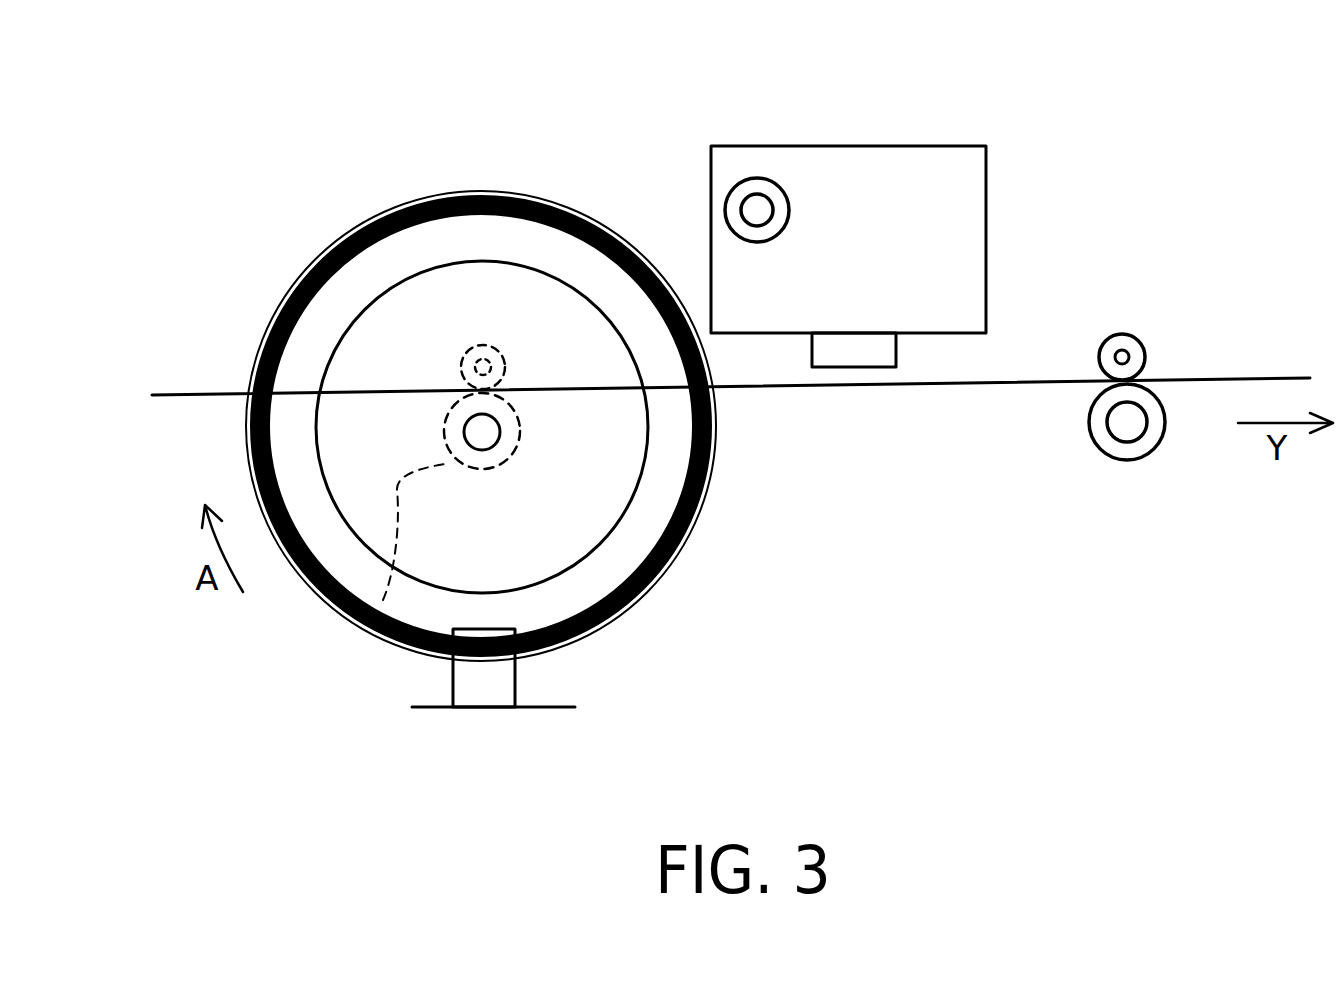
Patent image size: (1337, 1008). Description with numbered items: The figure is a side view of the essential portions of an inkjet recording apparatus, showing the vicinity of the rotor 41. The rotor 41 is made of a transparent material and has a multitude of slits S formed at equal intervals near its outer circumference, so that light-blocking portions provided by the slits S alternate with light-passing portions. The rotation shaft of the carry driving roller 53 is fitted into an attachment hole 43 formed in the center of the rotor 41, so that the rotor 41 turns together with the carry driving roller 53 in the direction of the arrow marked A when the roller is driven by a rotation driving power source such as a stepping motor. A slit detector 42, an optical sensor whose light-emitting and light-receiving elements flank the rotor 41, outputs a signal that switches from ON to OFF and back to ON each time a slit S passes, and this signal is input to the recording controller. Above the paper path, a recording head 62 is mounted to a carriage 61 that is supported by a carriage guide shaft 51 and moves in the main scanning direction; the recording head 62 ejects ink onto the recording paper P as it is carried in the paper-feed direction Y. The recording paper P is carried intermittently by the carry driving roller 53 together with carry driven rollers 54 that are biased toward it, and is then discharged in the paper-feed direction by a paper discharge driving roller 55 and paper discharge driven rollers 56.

The rotor 41 is at (377, 214).
The slit detector 42 is at (508, 682).
The attachment hole 43 is at (518, 432).
The carriage guide shaft 51 is at (757, 192).
The carry driving roller 53 is at (383, 600).
The carry driven roller 54 is at (488, 345).
The paper discharge driving roller 55 is at (1128, 460).
The paper discharge driven roller 56 is at (1120, 345).
The carriage 61 is at (823, 156).
The recording head 62 is at (870, 355).
The slits S is at (306, 284).
The recording paper P is at (1236, 378).